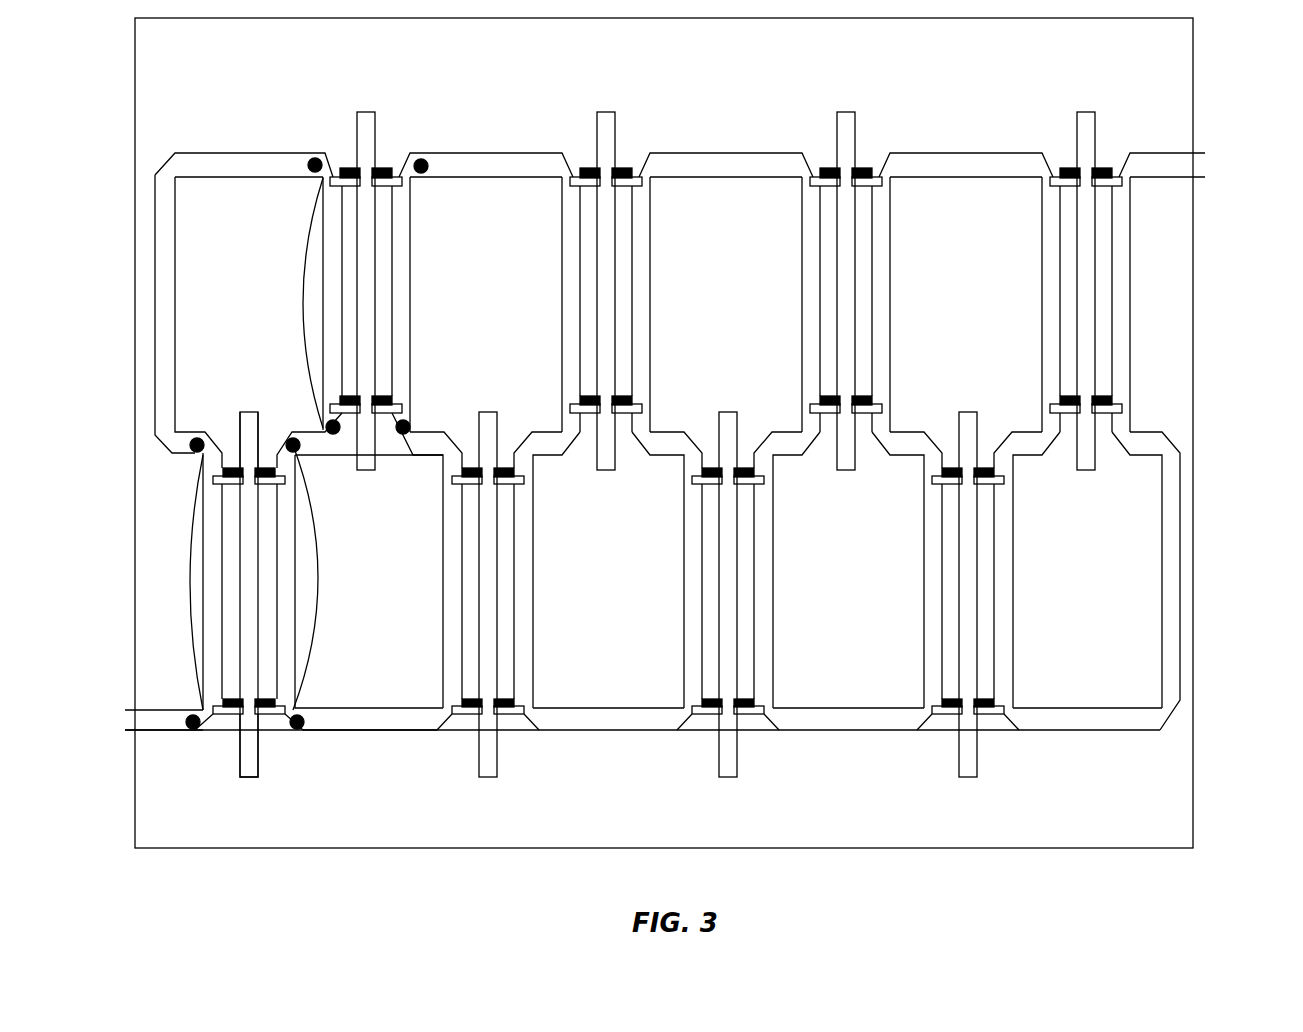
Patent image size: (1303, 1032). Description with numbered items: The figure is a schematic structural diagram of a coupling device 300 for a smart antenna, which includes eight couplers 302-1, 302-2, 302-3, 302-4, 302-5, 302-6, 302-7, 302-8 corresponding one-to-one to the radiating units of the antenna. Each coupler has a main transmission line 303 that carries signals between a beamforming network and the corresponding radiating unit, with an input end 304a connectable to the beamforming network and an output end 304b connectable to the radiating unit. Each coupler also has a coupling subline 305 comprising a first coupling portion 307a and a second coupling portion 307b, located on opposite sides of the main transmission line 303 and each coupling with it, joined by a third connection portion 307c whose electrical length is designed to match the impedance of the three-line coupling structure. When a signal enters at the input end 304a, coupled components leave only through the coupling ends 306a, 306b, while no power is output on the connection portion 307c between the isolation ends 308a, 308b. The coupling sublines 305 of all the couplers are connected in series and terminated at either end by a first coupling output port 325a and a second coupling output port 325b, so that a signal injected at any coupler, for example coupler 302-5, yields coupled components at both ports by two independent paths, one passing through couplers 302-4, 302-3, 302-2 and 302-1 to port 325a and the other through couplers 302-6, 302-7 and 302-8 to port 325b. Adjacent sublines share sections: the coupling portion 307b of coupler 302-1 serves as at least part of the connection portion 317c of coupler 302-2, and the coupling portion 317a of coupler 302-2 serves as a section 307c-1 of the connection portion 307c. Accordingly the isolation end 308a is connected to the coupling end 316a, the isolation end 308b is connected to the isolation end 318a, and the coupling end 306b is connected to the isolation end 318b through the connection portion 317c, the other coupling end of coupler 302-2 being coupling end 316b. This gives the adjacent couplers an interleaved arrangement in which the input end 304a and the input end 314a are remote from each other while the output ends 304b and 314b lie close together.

The coupling device 300 is at (1020, 51).
The coupler 302-1 is at (248, 617).
The coupler 302-2 is at (364, 272).
The coupler 302-3 is at (484, 617).
The coupler 302-4 is at (602, 272).
The coupler 302-5 is at (720, 617).
The coupler 302-6 is at (838, 272).
The coupler 302-7 is at (958, 617).
The coupler 302-8 is at (1086, 272).
The main transmission line 303 is at (250, 648).
The input end 304a is at (277, 749).
The output end 304b is at (245, 425).
The coupling subline 305 is at (215, 583).
The coupling end 306a is at (189, 730).
The coupling end 306b is at (303, 728).
The first coupling portion 307a is at (194, 592).
The second coupling portion 307b is at (320, 582).
The third connection portion 307c is at (226, 172).
The section of connection portion 307c-1 is at (330, 208).
The isolation end 308a is at (193, 453).
The isolation end 308b is at (299, 452).
The input end 314a is at (358, 140).
The output end 314b is at (307, 490).
The coupling end 316a is at (310, 158).
The coupling end 316b is at (424, 158).
The coupling portion 317a is at (303, 302).
The connection portion 317c is at (374, 718).
The isolation end 318a is at (328, 421).
The isolation end 318b is at (406, 420).
The first coupling output port 325a is at (138, 721).
The second coupling output port 325b is at (1193, 165).